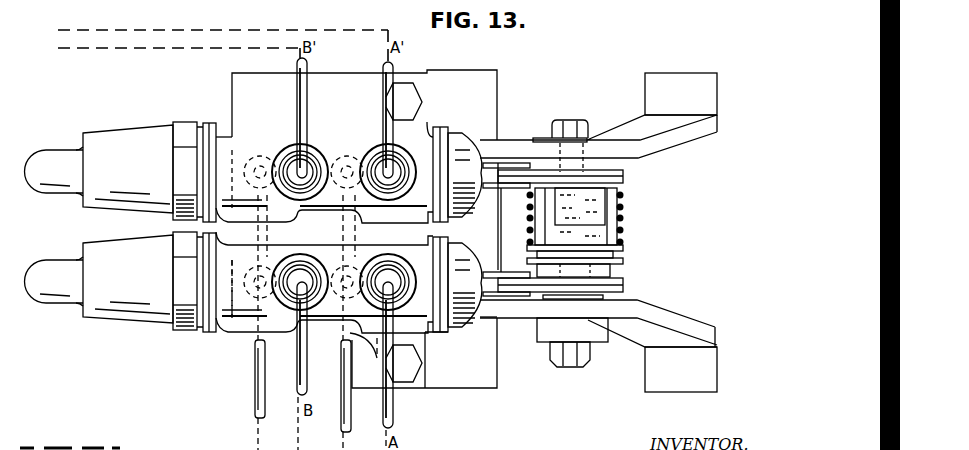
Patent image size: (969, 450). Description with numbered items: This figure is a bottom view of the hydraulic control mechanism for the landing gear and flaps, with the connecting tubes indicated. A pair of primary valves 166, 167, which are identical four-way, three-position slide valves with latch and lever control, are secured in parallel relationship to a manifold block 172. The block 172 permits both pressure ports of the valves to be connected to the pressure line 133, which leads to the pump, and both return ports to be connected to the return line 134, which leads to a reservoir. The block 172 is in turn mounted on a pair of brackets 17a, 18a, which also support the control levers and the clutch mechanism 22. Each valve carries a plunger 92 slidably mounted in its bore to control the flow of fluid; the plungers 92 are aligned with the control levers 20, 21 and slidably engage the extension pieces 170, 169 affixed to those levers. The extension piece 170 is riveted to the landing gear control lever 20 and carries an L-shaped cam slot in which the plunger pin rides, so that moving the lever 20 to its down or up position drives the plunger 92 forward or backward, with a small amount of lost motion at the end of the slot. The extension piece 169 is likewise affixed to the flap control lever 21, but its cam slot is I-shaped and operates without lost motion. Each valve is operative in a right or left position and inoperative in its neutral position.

The primary valve 166 is at (189, 103).
The primary valve 167 is at (197, 343).
The manifold block 172 is at (252, 90).
The pressure line 133 is at (258, 383).
The return line 134 is at (344, 430).
The bracket 18a is at (637, 123).
The bracket 17a is at (645, 352).
The plunger 92 is at (494, 182).
The control lever 20 is at (625, 177).
The extension piece 170 is at (617, 188).
The clutch mechanism 22 is at (628, 229).
The extension piece 169 is at (605, 285).
The control lever 21 is at (628, 283).